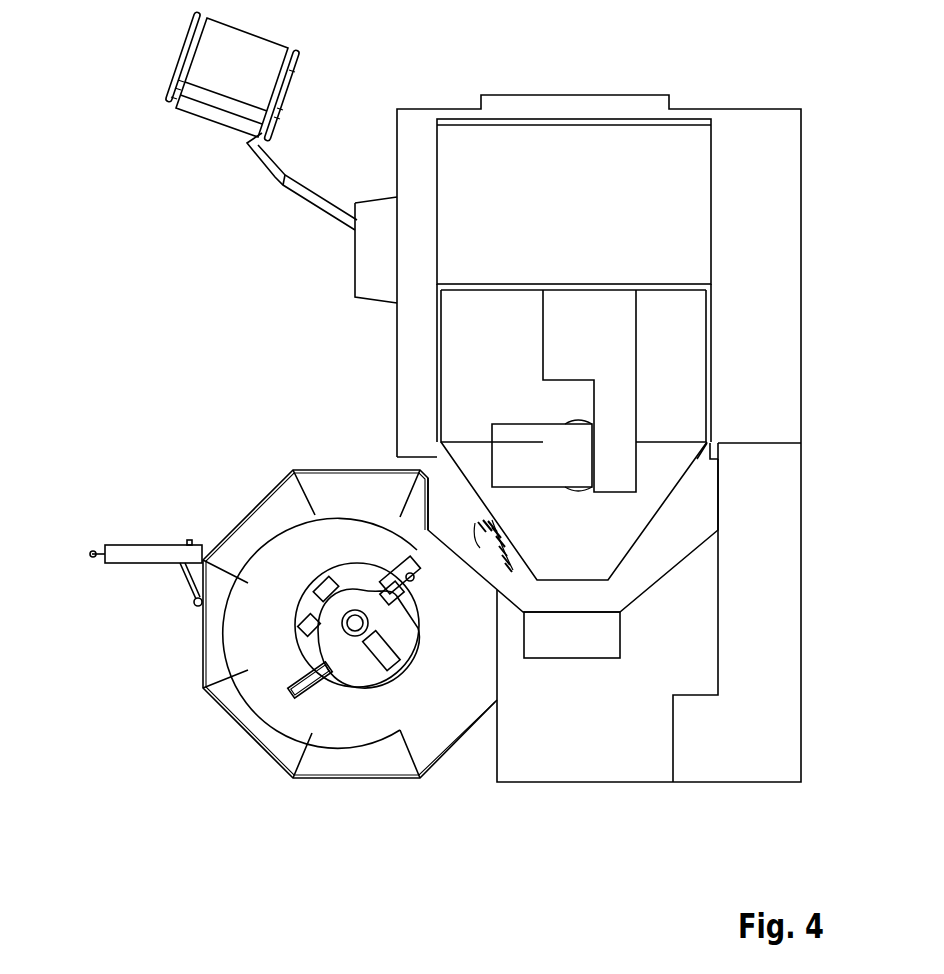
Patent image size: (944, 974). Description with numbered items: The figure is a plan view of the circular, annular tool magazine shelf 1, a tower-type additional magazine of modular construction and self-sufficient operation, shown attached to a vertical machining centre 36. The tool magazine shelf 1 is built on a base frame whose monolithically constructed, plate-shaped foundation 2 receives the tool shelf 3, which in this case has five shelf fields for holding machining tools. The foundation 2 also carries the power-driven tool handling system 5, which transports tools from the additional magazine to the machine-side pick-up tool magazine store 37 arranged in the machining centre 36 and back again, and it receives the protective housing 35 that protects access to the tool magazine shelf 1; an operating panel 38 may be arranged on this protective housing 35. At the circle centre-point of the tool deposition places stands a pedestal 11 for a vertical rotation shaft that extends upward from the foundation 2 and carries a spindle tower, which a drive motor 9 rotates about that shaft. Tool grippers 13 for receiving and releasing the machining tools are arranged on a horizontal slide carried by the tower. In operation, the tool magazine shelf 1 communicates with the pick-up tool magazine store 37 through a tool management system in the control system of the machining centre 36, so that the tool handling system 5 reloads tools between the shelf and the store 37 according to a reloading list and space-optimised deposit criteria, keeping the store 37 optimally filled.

The tool magazine shelf 1 is at (203, 831).
The foundation 2 is at (353, 722).
The tool shelf 3 is at (314, 806).
The tool handling system 5 is at (393, 558).
The drive motor 9 is at (322, 588).
The pedestal 11 is at (300, 637).
The tool grippers 13 is at (413, 560).
The protective housing 35 is at (222, 708).
The vertical machining centre 36 is at (453, 93).
The machine-side pick-up tool magazine store 37 is at (475, 553).
The operating panel 38 is at (133, 555).